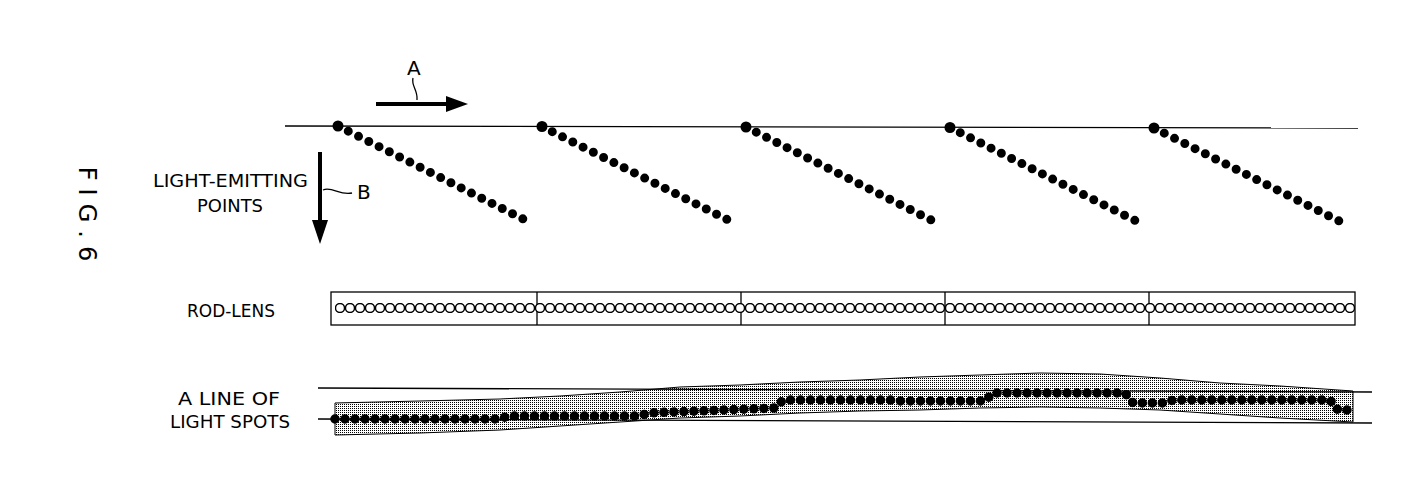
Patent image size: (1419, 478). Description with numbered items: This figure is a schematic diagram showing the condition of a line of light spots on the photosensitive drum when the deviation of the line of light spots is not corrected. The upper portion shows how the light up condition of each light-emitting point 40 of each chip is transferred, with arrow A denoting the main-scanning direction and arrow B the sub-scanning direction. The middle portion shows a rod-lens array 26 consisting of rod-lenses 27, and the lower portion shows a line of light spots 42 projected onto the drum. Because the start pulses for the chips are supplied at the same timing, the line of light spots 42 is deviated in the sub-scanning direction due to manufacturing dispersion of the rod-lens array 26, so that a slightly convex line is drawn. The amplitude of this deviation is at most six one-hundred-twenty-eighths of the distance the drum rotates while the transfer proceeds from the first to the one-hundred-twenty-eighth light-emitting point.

The light-emitting point 40 is at (747, 124).
The rod-lens array 26 is at (1358, 313).
The rod-lens 27 is at (828, 305).
The line of light spots 42 is at (343, 410).